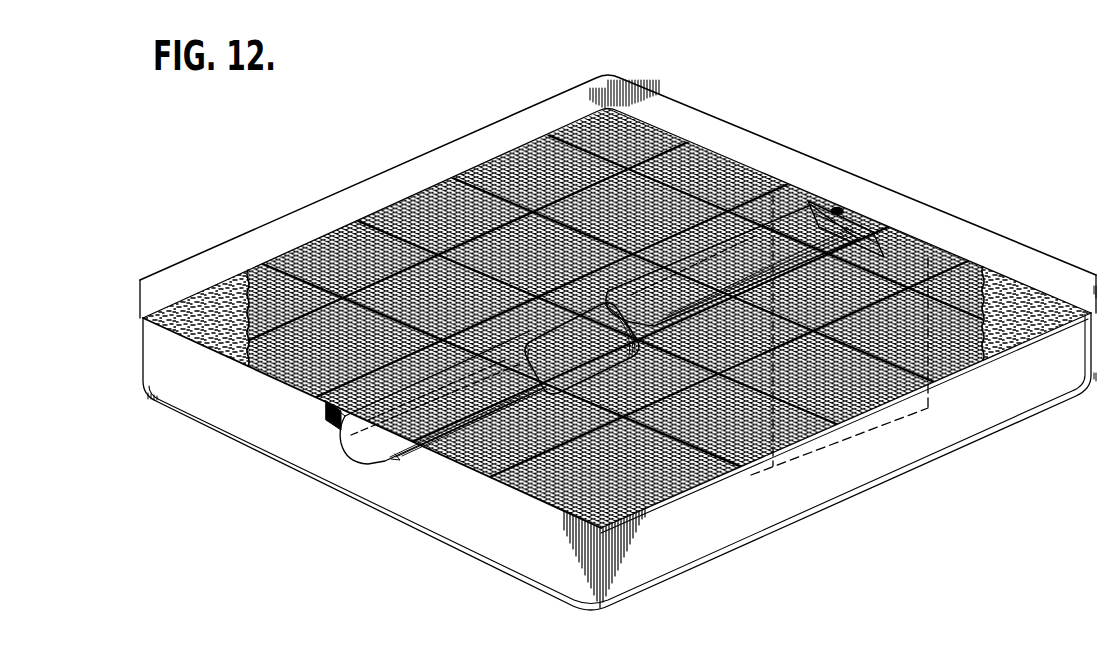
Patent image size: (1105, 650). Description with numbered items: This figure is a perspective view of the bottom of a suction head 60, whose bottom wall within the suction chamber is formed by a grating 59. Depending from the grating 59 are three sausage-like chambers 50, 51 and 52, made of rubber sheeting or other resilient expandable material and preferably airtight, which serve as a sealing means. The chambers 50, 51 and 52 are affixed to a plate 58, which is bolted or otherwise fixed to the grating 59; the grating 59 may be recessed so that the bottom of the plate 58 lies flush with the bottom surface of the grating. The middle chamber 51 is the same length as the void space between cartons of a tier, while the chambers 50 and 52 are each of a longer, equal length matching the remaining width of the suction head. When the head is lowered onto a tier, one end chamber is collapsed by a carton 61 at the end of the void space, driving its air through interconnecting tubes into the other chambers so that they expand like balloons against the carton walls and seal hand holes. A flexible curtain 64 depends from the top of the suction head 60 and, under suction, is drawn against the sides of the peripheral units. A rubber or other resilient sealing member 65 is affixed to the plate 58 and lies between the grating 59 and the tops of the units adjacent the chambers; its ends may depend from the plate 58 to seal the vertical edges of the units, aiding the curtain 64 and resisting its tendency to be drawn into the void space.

The sausage-like chamber 50 is at (448, 390).
The sausage-like chamber 51 is at (572, 349).
The sausage-like chamber 52 is at (729, 281).
The plate 58 is at (848, 202).
The grating 59 is at (951, 345).
The suction head 60 is at (950, 203).
The carton 61 is at (920, 402).
The flexible curtain 64 is at (282, 418).
The resilient sealing member 65 is at (829, 200).